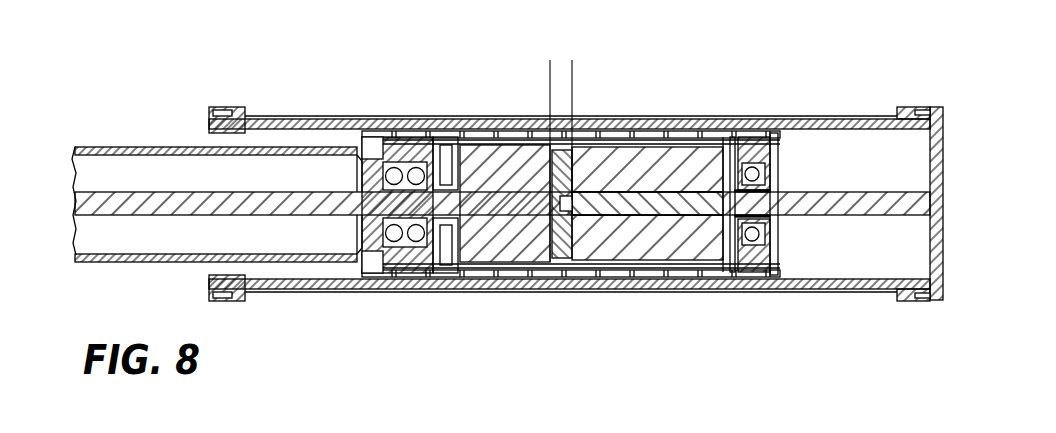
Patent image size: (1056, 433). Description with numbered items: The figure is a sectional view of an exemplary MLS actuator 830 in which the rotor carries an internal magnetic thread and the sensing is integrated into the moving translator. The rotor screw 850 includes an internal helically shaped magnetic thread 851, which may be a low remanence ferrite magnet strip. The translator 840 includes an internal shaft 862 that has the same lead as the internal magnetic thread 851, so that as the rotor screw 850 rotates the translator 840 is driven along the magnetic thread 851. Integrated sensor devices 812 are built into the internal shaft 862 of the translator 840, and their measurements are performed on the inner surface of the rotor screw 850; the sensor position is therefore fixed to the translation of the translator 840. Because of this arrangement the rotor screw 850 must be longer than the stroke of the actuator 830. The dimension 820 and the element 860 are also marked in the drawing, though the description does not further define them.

The MLS actuator 830 is at (213, 82).
The integrated sensor devices 812 is at (548, 256).
The gap 820 is at (522, 69).
The translator 840 is at (630, 298).
The rotor screw 850 is at (702, 275).
The internal magnetic thread 851 is at (633, 240).
The rotor core 860 is at (628, 255).
The internal shaft 862 is at (826, 224).